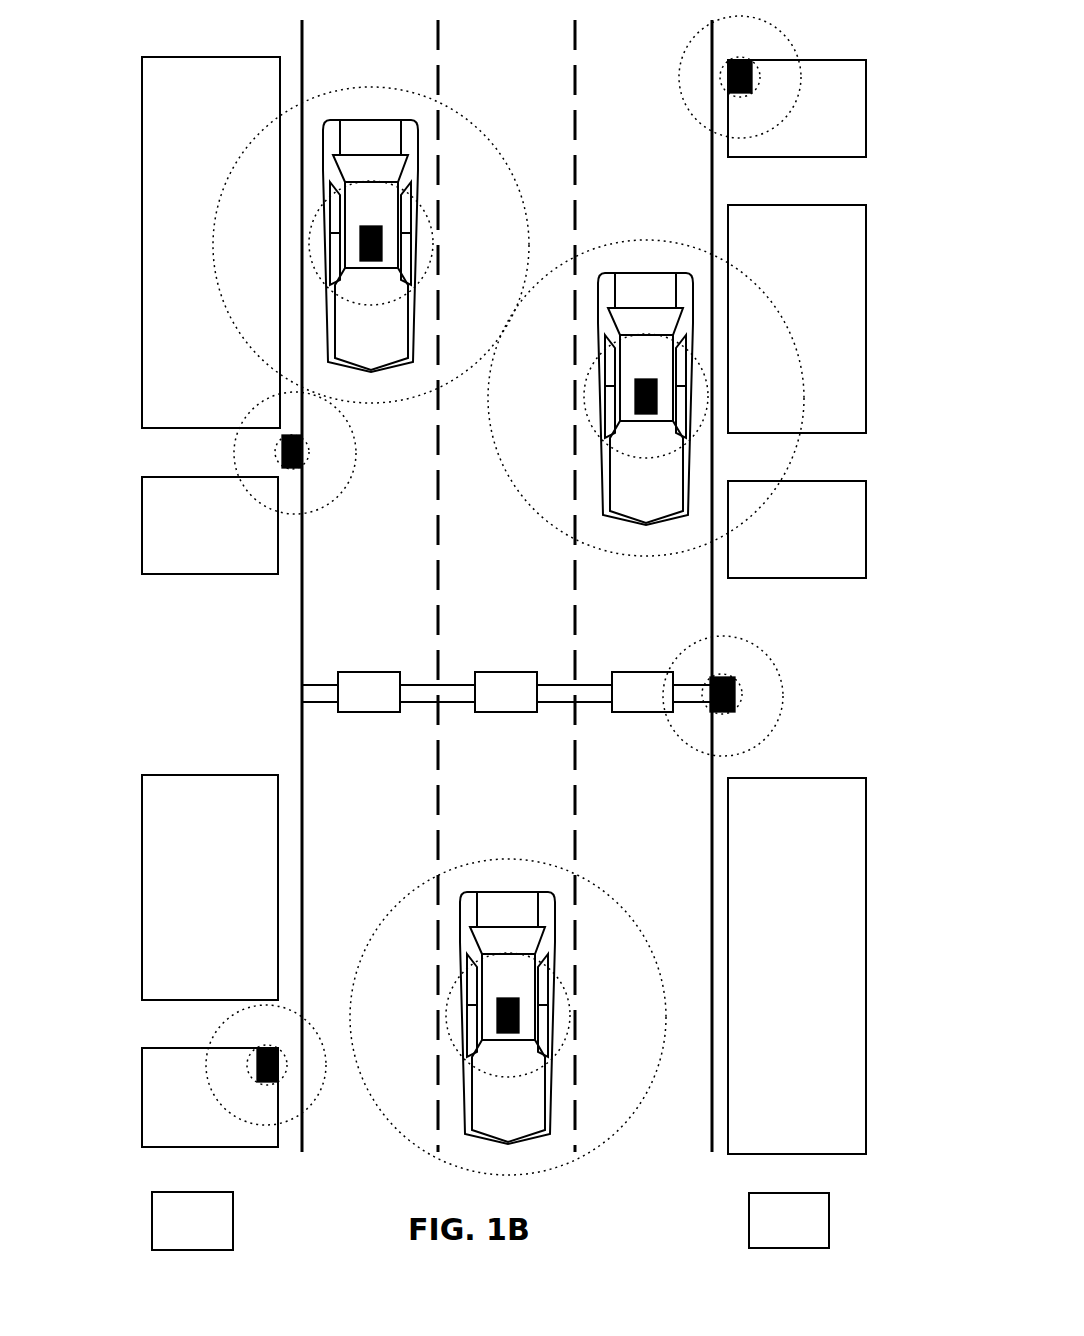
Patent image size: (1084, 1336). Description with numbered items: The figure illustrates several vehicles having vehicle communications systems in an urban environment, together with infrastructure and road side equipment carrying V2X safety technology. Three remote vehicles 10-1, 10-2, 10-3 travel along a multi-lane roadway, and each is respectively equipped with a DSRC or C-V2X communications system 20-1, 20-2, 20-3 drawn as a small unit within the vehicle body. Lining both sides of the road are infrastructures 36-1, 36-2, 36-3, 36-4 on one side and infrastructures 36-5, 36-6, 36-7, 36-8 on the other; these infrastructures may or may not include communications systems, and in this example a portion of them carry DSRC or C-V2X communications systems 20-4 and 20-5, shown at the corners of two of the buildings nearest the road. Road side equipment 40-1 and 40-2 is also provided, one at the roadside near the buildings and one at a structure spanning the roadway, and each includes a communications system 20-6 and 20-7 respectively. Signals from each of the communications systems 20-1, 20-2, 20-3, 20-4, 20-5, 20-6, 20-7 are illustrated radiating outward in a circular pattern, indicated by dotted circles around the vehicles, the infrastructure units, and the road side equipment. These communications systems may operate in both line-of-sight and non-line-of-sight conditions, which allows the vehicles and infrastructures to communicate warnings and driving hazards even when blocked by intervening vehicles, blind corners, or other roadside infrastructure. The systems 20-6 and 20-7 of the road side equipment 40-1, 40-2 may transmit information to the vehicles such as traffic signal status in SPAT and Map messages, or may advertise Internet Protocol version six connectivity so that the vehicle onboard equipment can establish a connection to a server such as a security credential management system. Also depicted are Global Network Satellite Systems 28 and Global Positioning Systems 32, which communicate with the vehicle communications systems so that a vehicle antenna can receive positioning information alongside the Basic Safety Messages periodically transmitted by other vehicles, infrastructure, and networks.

The vehicle 10-1 is at (371, 221).
The vehicle 10-2 is at (508, 998).
The vehicle 10-3 is at (646, 374).
The communications system 20-1 is at (360, 243).
The communications system 20-2 is at (497, 1012).
The communications system 20-3 is at (635, 398).
The communications system 20-4 is at (257, 1068).
The communications system 20-5 is at (728, 77).
The communications system 20-6 is at (222, 450).
The communications system 20-7 is at (758, 696).
The Global Network Satellite Systems (GNSS) 28 is at (152, 1222).
The Global Positioning Systems (GPS) 32 is at (749, 1222).
The infrastructure 36-1 is at (142, 243).
The infrastructure 36-2 is at (142, 522).
The infrastructure 36-3 is at (142, 886).
The infrastructure 36-4 is at (142, 1093).
The infrastructure 36-5 is at (866, 108).
The infrastructure 36-6 is at (866, 318).
The infrastructure 36-7 is at (866, 527).
The infrastructure 36-8 is at (866, 965).
The road side equipment (RSE) 40-1 is at (282, 455).
The road side equipment (RSE) 40-2 is at (735, 700).